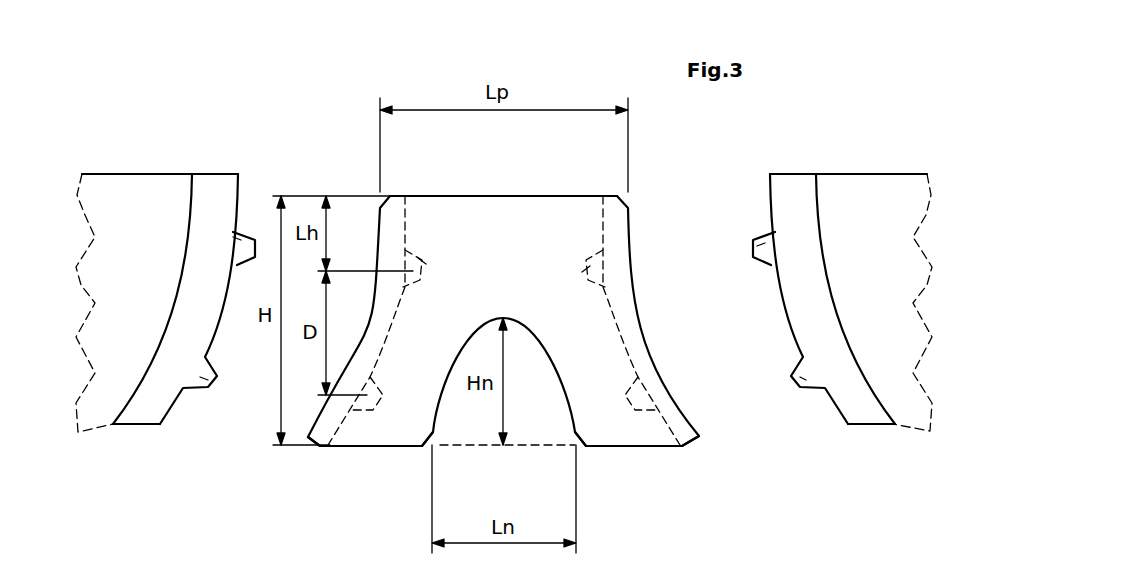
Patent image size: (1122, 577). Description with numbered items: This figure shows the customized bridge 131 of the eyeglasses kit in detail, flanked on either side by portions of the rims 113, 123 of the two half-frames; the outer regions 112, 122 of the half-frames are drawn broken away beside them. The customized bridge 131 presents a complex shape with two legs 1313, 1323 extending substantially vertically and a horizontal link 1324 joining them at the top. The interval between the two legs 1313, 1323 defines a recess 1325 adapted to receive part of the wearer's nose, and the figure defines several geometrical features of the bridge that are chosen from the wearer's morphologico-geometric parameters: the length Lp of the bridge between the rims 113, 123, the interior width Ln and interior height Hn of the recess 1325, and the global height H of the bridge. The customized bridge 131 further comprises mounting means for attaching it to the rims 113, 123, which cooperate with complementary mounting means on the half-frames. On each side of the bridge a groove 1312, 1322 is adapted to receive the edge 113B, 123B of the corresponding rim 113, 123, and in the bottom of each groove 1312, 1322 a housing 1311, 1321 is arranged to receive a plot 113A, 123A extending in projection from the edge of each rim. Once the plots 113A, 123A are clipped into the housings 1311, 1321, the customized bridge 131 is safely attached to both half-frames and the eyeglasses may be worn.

The first outer member 112 is at (142, 197).
The rim 113 is at (168, 408).
The plot 113A is at (238, 233).
The edge 113B is at (217, 337).
The second outer member 122 is at (868, 197).
The rim 123 is at (792, 197).
The plot 123A is at (757, 246).
The edge 123B is at (790, 325).
The customized bridge 131 is at (618, 240).
The housing 1311 is at (420, 262).
The groove 1312 is at (392, 327).
The leg 1313 is at (387, 430).
The housing 1321 is at (587, 270).
The groove 1322 is at (615, 325).
The leg 1323 is at (622, 430).
The horizontal link 1324 is at (523, 208).
The recess 1325 is at (562, 400).